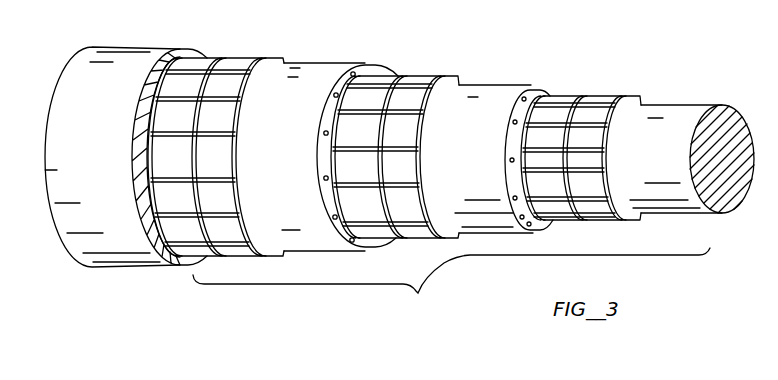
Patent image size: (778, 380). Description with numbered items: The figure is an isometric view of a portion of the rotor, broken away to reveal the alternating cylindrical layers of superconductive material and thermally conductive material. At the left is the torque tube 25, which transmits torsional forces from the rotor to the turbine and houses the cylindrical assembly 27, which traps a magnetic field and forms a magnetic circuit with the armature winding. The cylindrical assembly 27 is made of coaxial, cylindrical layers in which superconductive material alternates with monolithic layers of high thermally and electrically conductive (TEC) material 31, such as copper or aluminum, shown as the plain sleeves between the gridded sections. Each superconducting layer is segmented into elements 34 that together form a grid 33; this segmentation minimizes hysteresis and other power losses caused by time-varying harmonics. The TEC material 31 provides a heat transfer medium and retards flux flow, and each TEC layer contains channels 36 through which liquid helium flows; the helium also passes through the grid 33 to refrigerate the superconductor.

The torque tube 25 is at (137, 63).
The cylindrical assembly 27 is at (451, 284).
The thermally and electrically conductive (TEC) material 31 is at (327, 75).
The grid 33 is at (240, 88).
The elements 34 is at (253, 63).
The channels 36 is at (324, 114).